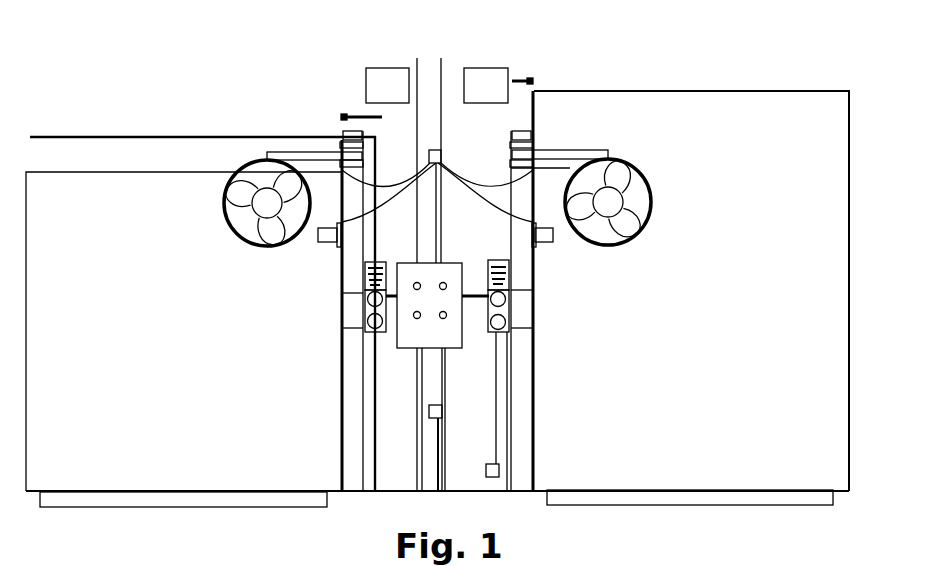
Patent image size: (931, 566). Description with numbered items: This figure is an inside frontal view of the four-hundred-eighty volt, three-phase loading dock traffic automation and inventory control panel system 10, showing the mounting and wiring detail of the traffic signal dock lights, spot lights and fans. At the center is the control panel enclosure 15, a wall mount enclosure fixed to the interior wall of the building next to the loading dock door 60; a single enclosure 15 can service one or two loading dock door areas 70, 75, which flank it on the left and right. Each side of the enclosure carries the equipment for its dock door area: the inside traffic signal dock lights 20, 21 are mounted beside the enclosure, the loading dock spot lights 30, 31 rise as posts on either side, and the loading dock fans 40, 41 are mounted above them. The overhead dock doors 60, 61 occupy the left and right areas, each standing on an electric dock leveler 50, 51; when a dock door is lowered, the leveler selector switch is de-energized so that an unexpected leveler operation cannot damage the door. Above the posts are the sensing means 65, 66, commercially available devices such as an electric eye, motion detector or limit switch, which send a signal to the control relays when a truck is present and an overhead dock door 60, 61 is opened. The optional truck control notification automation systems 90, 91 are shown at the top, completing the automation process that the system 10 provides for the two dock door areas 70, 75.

The traffic and inventory control panel system 10 is at (458, 375).
The control panel enclosure 15 is at (399, 348).
The inside traffic signal dock light 20 is at (366, 305).
The inside traffic signal dock light 21 is at (510, 290).
The loading dock spot light 30 is at (331, 228).
The loading dock spot light 31 is at (541, 223).
The loading dock fan 40 is at (222, 190).
The loading dock fan 41 is at (645, 175).
The electric dock leveler 50 is at (248, 500).
The electric dock leveler 51 is at (754, 498).
The overhead dock door 60 is at (166, 190).
The overhead dock door 61 is at (793, 155).
The sensing means 65 is at (536, 81).
The sensing means 66 is at (342, 117).
The loading dock door area 70 is at (165, 529).
The loading dock door area 75 is at (650, 534).
The truck control notification automation system 90 is at (383, 80).
The truck control notification automation system 91 is at (488, 80).